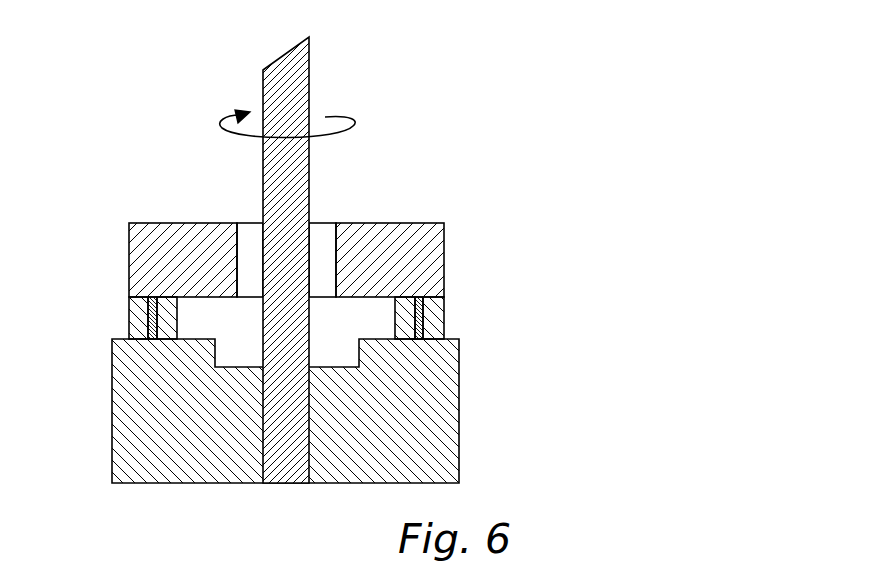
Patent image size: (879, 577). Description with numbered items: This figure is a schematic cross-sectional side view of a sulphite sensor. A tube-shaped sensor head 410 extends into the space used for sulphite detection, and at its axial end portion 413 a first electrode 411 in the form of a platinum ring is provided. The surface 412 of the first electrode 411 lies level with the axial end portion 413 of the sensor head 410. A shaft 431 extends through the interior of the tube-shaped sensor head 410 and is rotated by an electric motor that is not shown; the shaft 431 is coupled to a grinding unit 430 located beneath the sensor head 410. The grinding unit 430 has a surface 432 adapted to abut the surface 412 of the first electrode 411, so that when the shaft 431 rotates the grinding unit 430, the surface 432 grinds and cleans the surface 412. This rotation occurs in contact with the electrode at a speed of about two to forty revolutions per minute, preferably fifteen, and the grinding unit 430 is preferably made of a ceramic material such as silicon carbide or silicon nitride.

The sensor head 410 is at (420, 222).
The first electrode 411 is at (148, 317).
The surface of the first electrode 412 is at (155, 333).
The axial end portion 413 is at (418, 324).
The grinding unit 430 is at (433, 415).
The shaft 431 is at (292, 72).
The surface of the grinding unit 432 is at (155, 343).